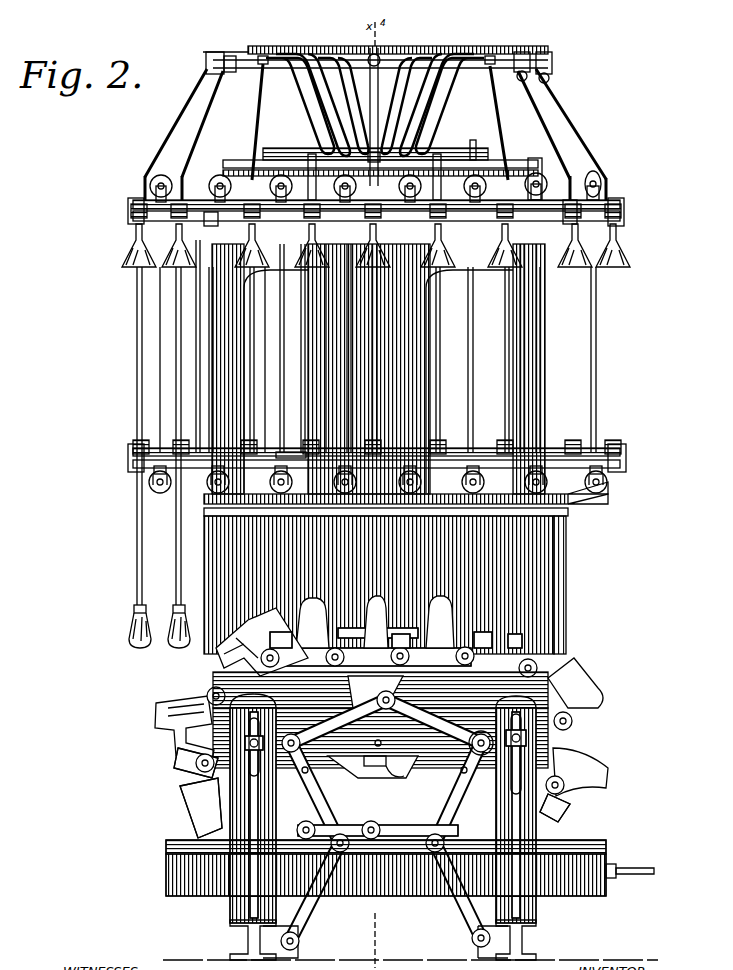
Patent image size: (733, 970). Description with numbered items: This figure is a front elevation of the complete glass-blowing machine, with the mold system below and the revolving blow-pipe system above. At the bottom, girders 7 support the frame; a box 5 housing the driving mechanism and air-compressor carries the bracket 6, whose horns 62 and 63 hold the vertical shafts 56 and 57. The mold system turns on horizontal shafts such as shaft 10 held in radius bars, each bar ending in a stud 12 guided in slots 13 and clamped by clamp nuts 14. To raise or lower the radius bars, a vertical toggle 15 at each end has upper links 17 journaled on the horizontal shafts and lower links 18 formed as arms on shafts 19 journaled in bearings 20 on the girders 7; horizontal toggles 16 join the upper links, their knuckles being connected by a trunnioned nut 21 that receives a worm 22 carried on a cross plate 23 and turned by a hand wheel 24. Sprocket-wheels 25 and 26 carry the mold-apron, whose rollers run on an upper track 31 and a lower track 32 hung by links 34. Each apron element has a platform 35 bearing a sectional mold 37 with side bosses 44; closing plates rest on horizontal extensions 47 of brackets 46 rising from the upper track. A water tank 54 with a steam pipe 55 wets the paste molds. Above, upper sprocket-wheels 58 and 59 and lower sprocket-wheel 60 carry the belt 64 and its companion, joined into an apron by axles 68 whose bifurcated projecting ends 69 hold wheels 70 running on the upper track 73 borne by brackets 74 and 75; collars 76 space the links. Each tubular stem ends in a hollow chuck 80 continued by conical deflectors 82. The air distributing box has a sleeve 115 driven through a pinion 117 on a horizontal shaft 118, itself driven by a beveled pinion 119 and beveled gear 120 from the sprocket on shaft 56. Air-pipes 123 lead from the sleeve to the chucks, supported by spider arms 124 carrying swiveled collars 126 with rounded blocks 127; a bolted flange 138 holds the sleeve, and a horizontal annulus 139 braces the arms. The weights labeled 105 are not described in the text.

The box 5 is at (368, 348).
The bracket 6 is at (383, 875).
The girders 7 is at (236, 930).
The horizontal shaft 10 is at (474, 744).
The stud 12 is at (392, 754).
The slots 13 is at (383, 808).
The clamp nuts 14 is at (248, 752).
The vertical toggle 15 is at (404, 755).
The horizontal toggles 16 is at (377, 838).
The upper links 17 is at (428, 812).
The lower links 18 is at (332, 842).
The shafts 19 is at (292, 934).
The bearings 20 is at (362, 952).
The trunnioned nut 21 is at (380, 725).
The worm 22 is at (338, 721).
The cross plate 23 is at (396, 777).
The hand wheel 24 is at (373, 772).
The sprocket-wheel 25 is at (186, 756).
The sprocket-wheel 26 is at (606, 736).
The upper track 31 is at (429, 717).
The lower track 32 is at (373, 652).
The links 34 is at (210, 818).
The platform 35 is at (512, 613).
The sectional mold 37 is at (196, 690).
The boss 44 is at (404, 627).
The brackets 46 is at (484, 625).
The horizontal extensions 47 is at (315, 629).
The water tank 54 is at (386, 868).
The steam pipe 55 is at (640, 862).
The vertical shaft 56 is at (258, 324).
The vertical shaft 57 is at (510, 336).
The upper sprocket-wheel 58 is at (205, 220).
The upper sprocket-wheel 59 is at (562, 216).
The lower sprocket-wheel 60 is at (290, 440).
The horn 62 is at (208, 290).
The horn 63 is at (530, 262).
The belt 64 is at (528, 175).
The axles 68 is at (129, 352).
The projecting ends 69 is at (214, 168).
The wheels 70 is at (270, 168).
The track 73 is at (464, 150).
The brackets 74 is at (300, 160).
The brackets 75 is at (248, 108).
The collars 76 is at (210, 438).
The hollow chuck 80 is at (128, 228).
The conical deflectors 82 is at (120, 262).
The weight rod 105 is at (118, 548).
The sleeve 115 is at (355, 348).
The pinion 117 is at (333, 348).
The horizontal shaft 118 is at (297, 348).
The beveled pinion 119 is at (270, 270).
The beveled gear 120 is at (212, 276).
The air-pipes 123 is at (200, 93).
The spider arms 124 is at (380, 94).
The collars 126 is at (545, 50).
The rounded blocks 127 is at (542, 70).
The bolted flange 138 is at (360, 126).
The horizontal annulus 139 is at (200, 46).